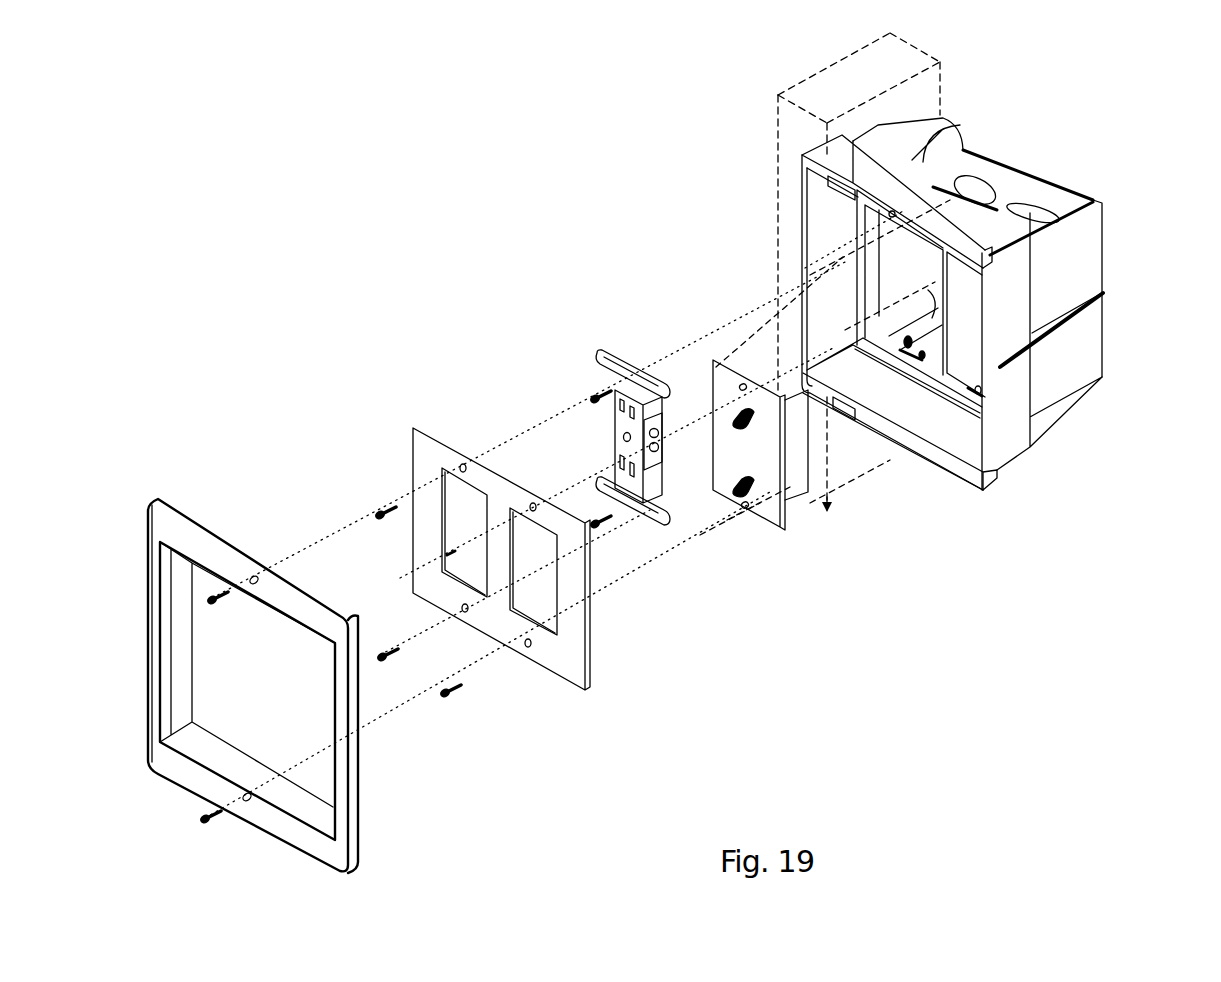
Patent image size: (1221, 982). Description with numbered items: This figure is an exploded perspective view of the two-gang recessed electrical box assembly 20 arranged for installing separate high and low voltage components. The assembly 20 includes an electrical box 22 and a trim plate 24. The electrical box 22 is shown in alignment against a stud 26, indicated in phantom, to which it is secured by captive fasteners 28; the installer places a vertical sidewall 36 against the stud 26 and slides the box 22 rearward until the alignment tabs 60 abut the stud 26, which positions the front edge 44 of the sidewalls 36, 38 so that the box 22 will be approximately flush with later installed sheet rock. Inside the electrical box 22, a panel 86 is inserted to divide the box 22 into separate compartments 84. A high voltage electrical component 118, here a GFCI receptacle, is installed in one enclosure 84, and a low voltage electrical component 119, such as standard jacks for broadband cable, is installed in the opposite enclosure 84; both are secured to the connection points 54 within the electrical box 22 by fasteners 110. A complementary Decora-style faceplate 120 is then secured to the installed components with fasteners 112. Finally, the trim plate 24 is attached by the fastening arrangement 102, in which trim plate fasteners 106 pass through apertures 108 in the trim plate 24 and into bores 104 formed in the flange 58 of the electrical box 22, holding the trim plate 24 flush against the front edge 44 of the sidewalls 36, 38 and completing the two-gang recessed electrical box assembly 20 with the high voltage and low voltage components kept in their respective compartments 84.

The two-gang recessed electrical box assembly 20 is at (322, 236).
The electrical box 22 is at (930, 312).
The trim plate 24 is at (408, 768).
The stud 26 is at (792, 132).
The captive fasteners 28 is at (800, 188).
The vertical sidewall 36 is at (1056, 282).
The sidewall 38 is at (953, 118).
The front edge 44 is at (947, 453).
The connection points 54 is at (908, 352).
The flange 58 is at (967, 257).
The alignment tabs 60 is at (800, 200).
The compartments 84 is at (893, 293).
The panel 86 is at (952, 308).
The fastening arrangement 102 is at (222, 660).
The bore 104 is at (893, 218).
The fasteners 106 is at (218, 604).
The aperture 108 is at (254, 578).
The fasteners 110 is at (597, 527).
The fasteners 112 is at (378, 508).
The high voltage electrical component 118 is at (623, 372).
The low voltage electrical component 119 is at (770, 532).
The Decora-style faceplate 120 is at (515, 488).